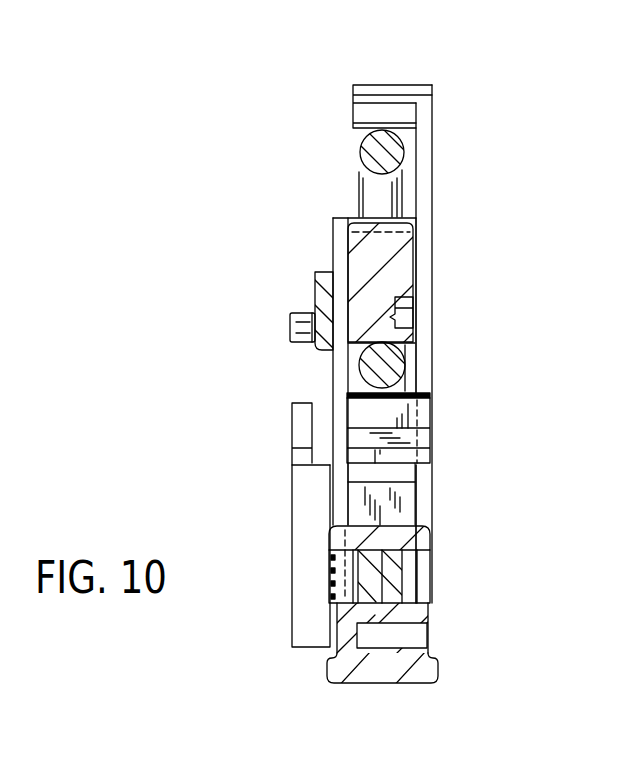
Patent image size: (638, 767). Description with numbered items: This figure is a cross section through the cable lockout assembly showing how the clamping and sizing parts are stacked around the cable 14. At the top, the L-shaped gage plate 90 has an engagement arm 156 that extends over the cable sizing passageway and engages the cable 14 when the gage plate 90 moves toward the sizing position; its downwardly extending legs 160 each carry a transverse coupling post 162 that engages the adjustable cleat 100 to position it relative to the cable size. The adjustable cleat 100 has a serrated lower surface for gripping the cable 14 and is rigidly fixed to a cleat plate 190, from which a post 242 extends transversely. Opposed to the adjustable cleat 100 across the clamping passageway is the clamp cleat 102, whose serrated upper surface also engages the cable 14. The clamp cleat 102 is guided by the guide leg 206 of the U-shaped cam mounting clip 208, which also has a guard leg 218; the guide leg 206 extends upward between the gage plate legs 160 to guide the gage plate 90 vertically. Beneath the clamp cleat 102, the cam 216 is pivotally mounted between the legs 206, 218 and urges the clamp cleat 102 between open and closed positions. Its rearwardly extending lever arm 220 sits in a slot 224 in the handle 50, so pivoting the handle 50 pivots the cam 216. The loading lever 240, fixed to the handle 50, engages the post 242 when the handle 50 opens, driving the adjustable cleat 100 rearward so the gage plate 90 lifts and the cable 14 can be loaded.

The engagement arm 156 is at (383, 103).
The gage plate 90 is at (432, 85).
The cable 14 is at (363, 159).
The cam mounting clip 208 is at (333, 218).
The leg 160 is at (427, 250).
The adjustable cleat 100 is at (410, 288).
The coupling post 162 is at (405, 317).
The cleat plate 190 is at (315, 272).
The post 242 is at (290, 328).
The guard leg 218 is at (333, 378).
The clamp cleat 102 is at (428, 393).
The loading lever 240 is at (292, 433).
The cam 216 is at (423, 482).
The guide leg 206 is at (410, 505).
The handle 50 is at (297, 605).
The lever arm 220 is at (395, 565).
The slot 224 is at (407, 587).